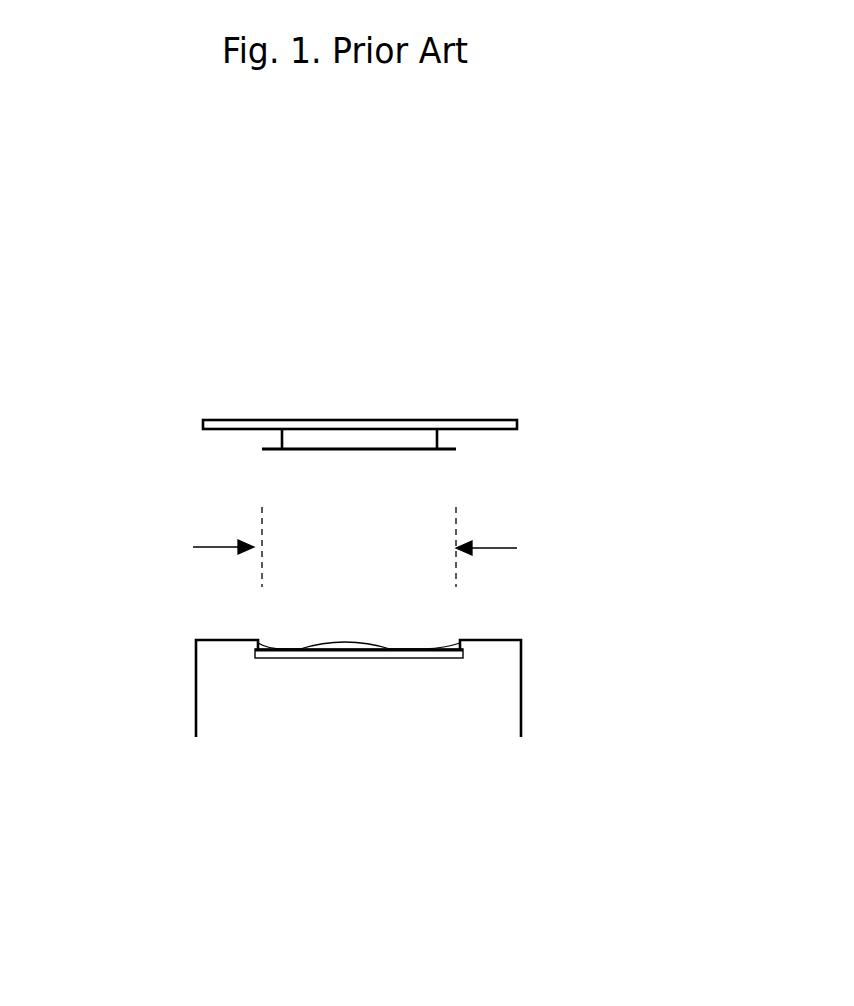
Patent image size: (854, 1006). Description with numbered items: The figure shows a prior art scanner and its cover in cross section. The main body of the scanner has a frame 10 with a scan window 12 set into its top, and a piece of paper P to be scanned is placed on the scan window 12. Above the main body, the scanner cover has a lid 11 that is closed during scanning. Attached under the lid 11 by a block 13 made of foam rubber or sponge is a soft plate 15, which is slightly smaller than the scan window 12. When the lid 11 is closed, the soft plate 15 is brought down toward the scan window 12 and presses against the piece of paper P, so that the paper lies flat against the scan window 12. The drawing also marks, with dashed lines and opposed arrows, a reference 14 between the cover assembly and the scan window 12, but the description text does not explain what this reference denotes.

The frame 10 is at (522, 737).
The lid 11 is at (378, 420).
The scan window 12 is at (284, 658).
The block 13 is at (437, 443).
The gap 14 is at (519, 561).
The soft plate 15 is at (477, 492).
The piece of paper P is at (249, 622).